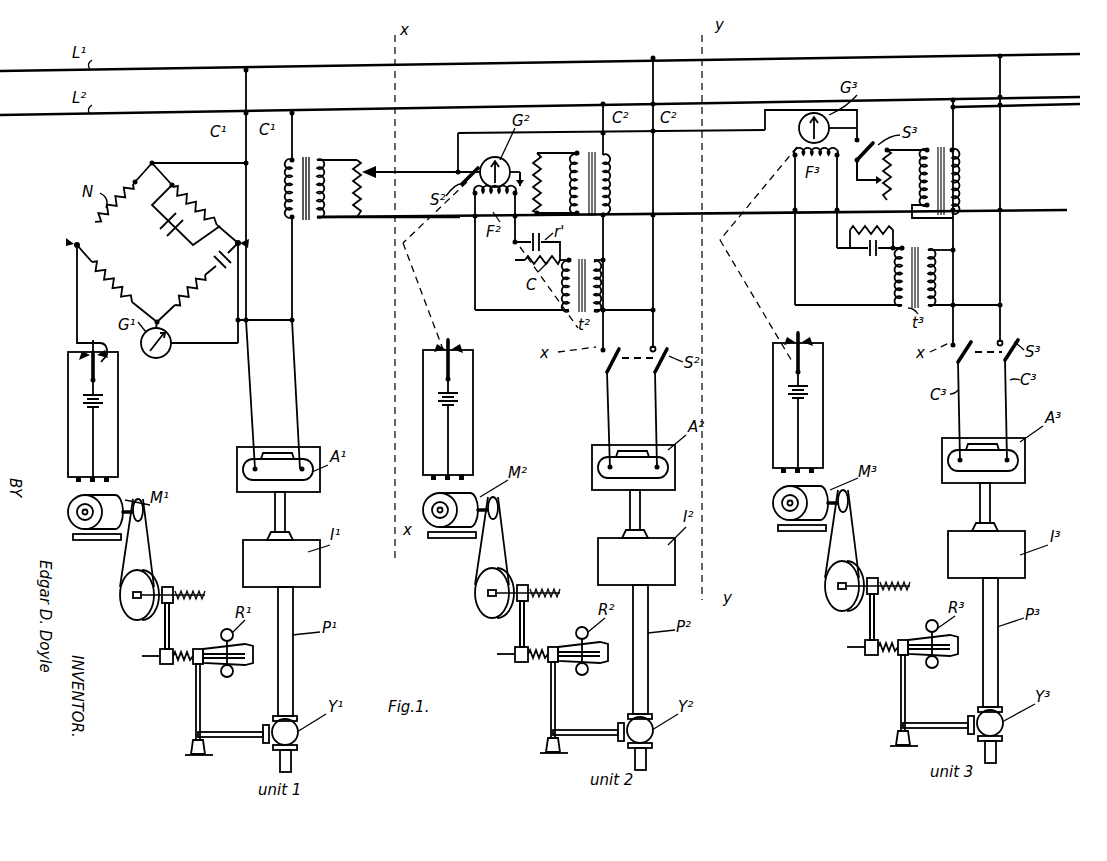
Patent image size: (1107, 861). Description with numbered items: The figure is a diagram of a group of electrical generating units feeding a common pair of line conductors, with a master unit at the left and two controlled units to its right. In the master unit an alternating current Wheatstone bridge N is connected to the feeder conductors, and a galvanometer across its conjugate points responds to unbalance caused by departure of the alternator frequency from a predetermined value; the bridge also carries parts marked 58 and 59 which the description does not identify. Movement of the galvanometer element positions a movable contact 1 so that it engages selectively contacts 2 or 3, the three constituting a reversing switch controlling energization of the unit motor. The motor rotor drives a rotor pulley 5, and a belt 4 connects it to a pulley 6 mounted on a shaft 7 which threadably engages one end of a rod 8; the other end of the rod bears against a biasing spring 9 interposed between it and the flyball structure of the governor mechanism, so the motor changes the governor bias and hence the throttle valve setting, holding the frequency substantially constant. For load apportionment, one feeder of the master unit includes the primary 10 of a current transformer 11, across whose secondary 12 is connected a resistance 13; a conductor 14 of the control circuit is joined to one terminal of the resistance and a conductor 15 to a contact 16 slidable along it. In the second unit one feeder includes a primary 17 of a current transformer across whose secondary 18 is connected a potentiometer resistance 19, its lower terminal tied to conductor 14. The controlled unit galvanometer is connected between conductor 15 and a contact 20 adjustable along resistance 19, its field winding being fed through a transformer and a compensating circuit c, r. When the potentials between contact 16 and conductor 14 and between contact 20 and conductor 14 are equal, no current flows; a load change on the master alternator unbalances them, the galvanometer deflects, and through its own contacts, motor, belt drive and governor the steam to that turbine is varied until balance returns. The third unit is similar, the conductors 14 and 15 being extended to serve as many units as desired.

The movable contact 1 is at (90, 380).
The contact 2 is at (72, 359).
The contact 3 is at (98, 354).
The belt 4 is at (158, 542).
The rotor pulley 5 is at (148, 520).
The pulley 6 is at (120, 598).
The shaft 7 is at (196, 592).
The rod 8 is at (170, 620).
The biasing spring 9 is at (177, 658).
The primary 10 is at (288, 196).
The current transformer 11 is at (308, 158).
The secondary 12 is at (324, 210).
The resistance 13 is at (362, 159).
The conductor 14 is at (398, 215).
The conductor 15 is at (420, 170).
The contact 16 is at (380, 168).
The primary 17 is at (610, 182).
The secondary 18 is at (573, 184).
The potentiometer resistance 19 is at (545, 162).
The contact 20 is at (522, 172).
The bridge contact 58 is at (78, 244).
The bridge resistance 59 is at (100, 249).